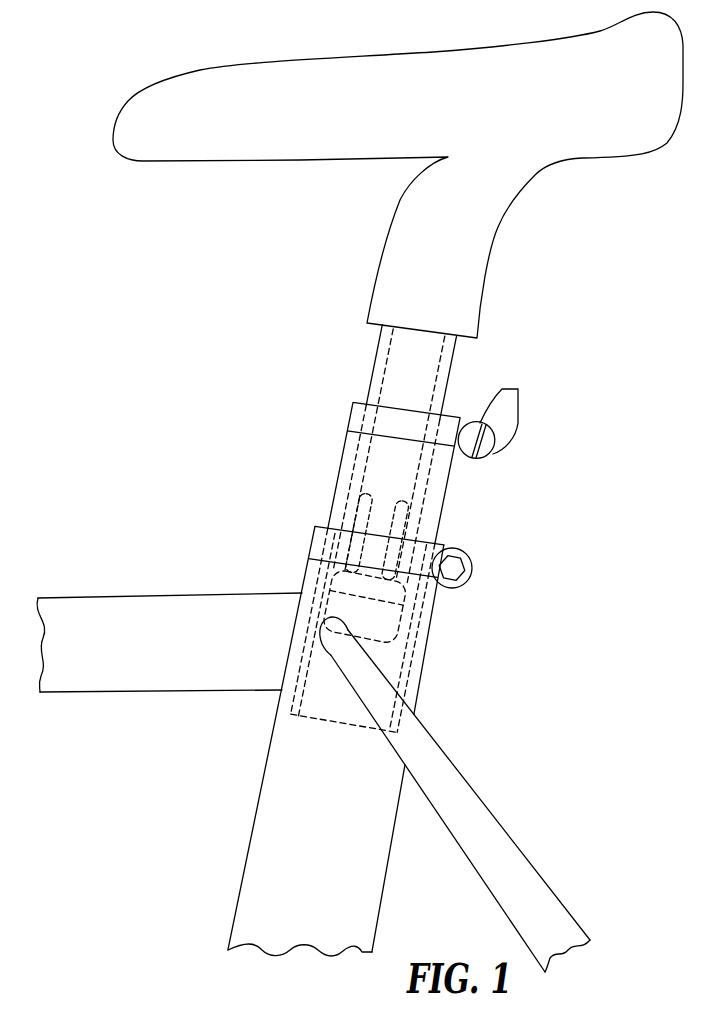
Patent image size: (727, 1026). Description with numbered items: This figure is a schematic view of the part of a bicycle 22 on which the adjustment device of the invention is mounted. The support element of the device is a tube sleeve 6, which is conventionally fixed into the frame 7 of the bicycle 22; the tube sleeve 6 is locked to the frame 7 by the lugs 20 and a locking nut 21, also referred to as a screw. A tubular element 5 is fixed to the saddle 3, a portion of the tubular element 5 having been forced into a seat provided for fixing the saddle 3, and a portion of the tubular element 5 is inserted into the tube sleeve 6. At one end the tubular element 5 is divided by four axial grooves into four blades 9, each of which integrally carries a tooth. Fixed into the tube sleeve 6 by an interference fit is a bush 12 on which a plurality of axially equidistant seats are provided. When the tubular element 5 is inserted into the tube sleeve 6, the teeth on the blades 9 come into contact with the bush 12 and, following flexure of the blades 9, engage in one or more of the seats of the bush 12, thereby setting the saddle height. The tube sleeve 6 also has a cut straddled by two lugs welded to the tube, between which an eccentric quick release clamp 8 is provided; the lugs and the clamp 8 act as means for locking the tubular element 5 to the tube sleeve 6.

The saddle 3 is at (607, 122).
The tubular element 5 is at (372, 366).
The tube sleeve 6 is at (447, 498).
The frame 7 is at (418, 702).
The eccentric quick release clamp 8 is at (527, 446).
The blades 9 is at (357, 486).
The bush 12 is at (415, 638).
The lugs 20 is at (478, 555).
The locking nut 21 is at (452, 568).
The bicycle 22 is at (208, 575).